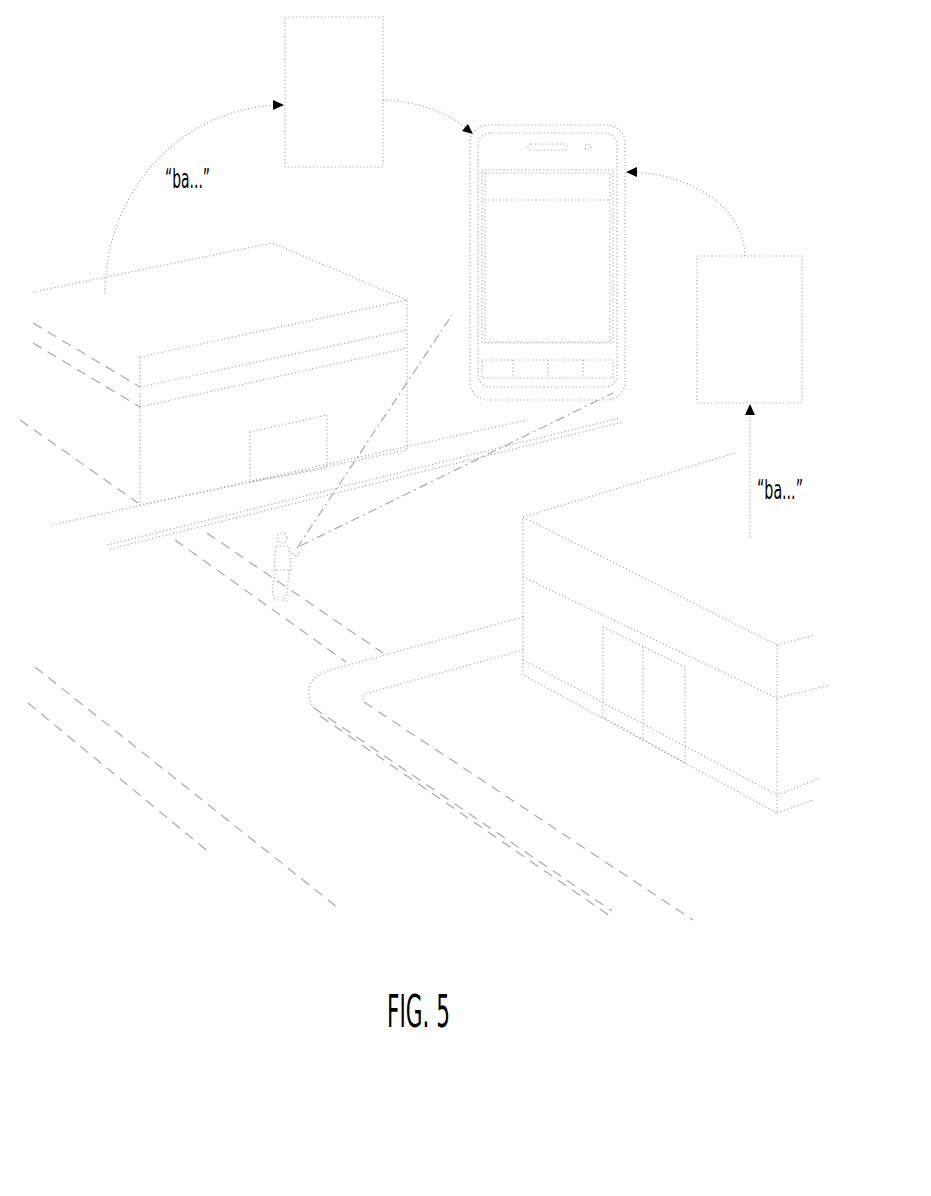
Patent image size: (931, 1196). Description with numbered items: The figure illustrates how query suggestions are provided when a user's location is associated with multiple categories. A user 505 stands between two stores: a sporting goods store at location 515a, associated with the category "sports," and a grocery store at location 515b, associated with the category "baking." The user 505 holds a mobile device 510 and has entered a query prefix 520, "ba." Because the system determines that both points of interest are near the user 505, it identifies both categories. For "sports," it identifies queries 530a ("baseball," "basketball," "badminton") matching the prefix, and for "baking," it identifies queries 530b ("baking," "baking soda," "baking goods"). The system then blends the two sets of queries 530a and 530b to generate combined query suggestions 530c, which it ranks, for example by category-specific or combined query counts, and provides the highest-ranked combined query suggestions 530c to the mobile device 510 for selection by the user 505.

The user 505 is at (277, 592).
The mobile device 510 is at (627, 247).
The sporting goods store location 515a is at (118, 452).
The grocery store location 515b is at (725, 785).
The query prefix 520 is at (470, 192).
The queries for the sports category 530a is at (283, 17).
The queries for the baking category 530b is at (693, 256).
The combined query suggestions 530c is at (463, 210).